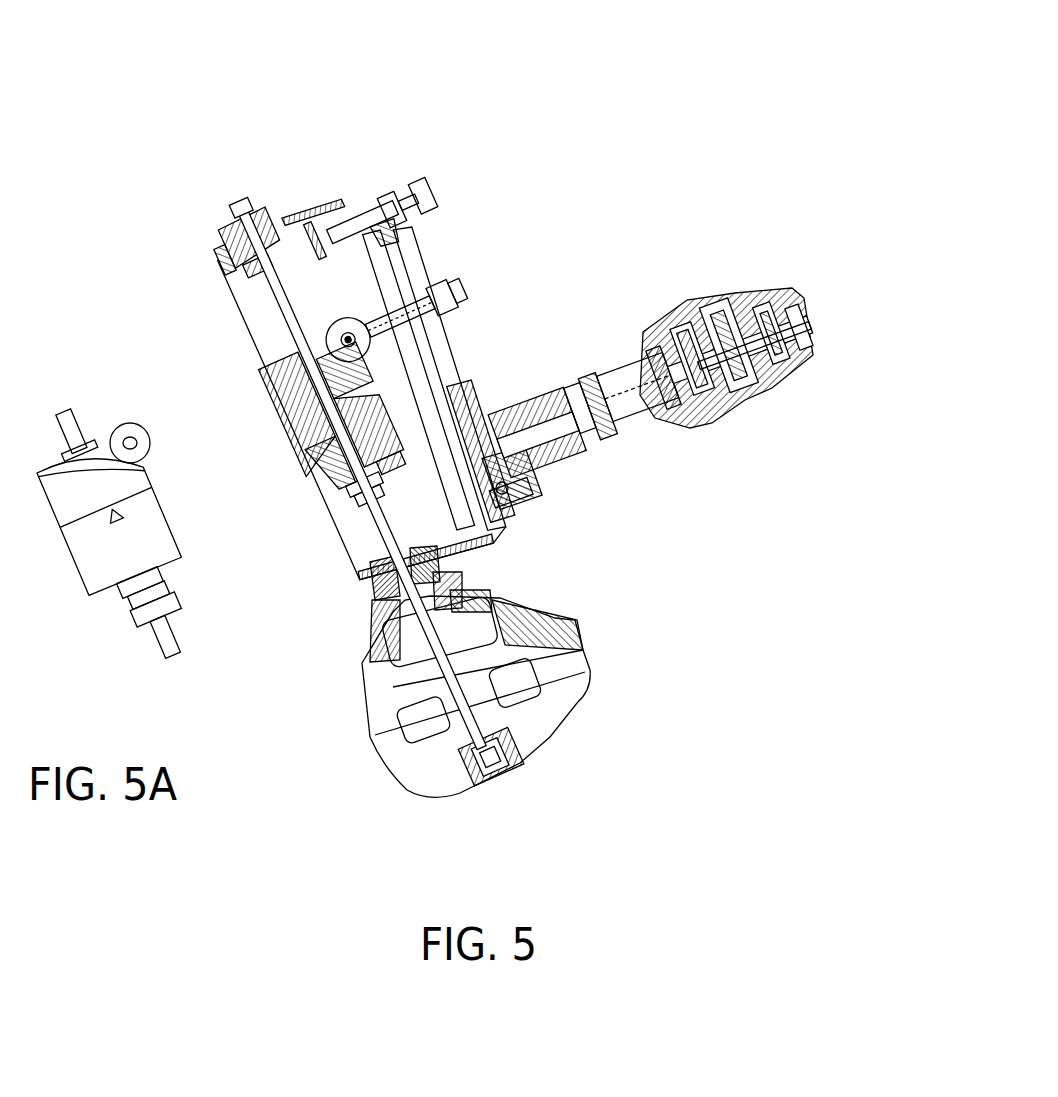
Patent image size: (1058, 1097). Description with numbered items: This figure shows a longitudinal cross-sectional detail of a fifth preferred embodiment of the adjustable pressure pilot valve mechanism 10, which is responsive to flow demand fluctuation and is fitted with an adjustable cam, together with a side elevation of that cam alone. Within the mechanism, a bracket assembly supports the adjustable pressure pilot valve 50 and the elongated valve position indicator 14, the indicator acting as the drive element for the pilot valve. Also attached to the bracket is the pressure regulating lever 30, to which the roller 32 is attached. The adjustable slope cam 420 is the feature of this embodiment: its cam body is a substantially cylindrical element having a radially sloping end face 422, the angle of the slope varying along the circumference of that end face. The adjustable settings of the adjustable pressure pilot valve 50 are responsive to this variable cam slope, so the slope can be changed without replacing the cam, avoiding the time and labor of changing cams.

In FIG. 5, the adjustable pressure pilot valve mechanism 10 is at (651, 104).
In FIG. 5, the elongated valve position indicator 14 is at (400, 541).
In FIG. 5, the pressure regulating lever 30 is at (478, 395).
In FIG. 5, the roller 32 is at (340, 337).
In FIG. 5A, the roller 32 is at (137, 425).
In FIG. 5, the adjustable pressure pilot valve 50 is at (757, 298).
In FIG. 5, the adjustable slope cam 420 is at (300, 468).
In FIG. 5A, the adjustable slope cam 420 is at (205, 587).
In FIG. 5, the sloping end face 422 is at (370, 352).